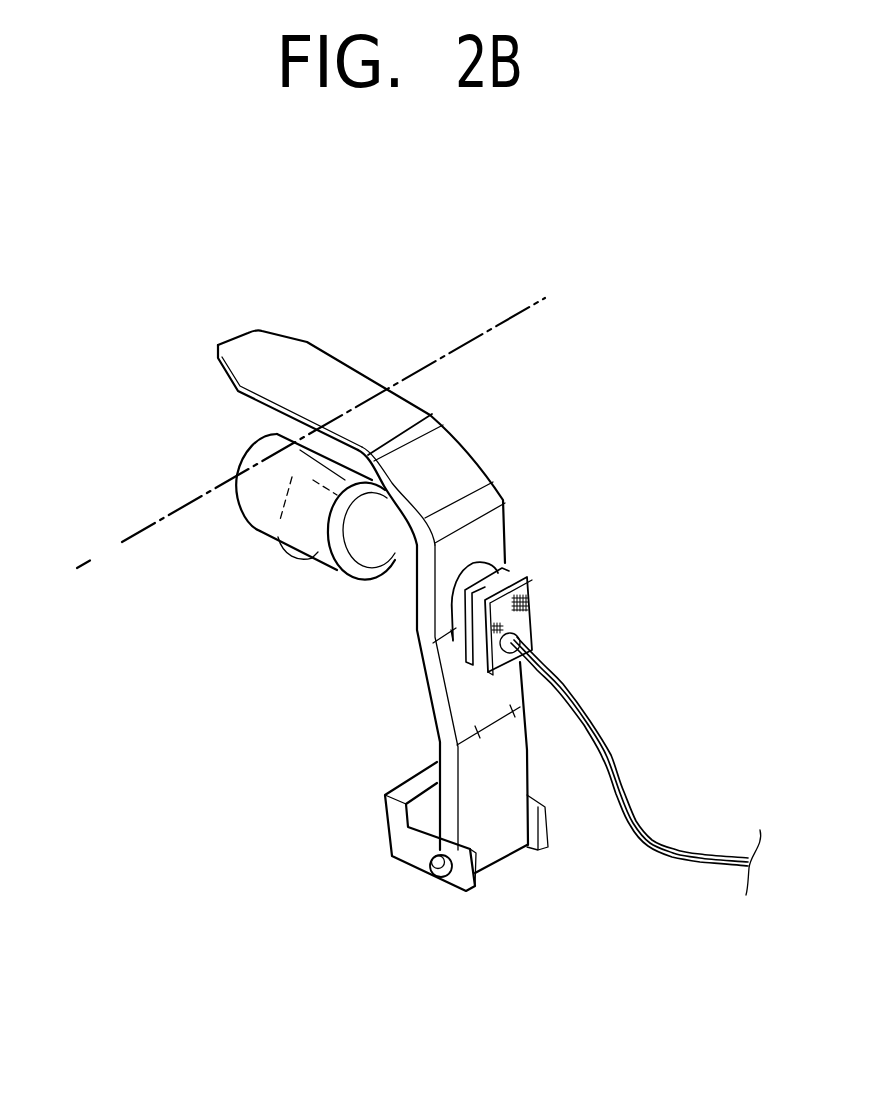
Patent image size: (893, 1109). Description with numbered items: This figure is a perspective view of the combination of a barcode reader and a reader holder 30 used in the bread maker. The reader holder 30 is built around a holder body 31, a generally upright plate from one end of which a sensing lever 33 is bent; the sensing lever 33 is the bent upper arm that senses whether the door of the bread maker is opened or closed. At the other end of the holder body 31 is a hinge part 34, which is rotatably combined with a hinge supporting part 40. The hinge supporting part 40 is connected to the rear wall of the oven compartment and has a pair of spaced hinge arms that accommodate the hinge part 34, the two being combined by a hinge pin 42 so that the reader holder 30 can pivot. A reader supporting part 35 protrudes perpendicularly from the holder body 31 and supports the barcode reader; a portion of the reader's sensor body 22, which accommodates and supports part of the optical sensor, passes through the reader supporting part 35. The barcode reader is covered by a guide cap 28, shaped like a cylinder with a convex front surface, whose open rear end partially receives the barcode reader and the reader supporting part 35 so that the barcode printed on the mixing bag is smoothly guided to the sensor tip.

The sensor body 22 is at (453, 630).
The guide cap 28 is at (268, 533).
The reader holder 30 is at (670, 403).
The holder body 31 is at (497, 697).
The sensing lever 33 is at (277, 334).
The hinge part 34 is at (475, 873).
The reader supporting part 35 is at (400, 551).
The hinge supporting part 40 is at (397, 867).
The hinge pin 42 is at (440, 870).